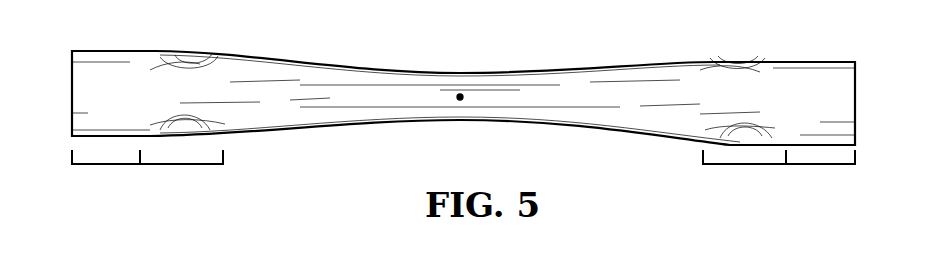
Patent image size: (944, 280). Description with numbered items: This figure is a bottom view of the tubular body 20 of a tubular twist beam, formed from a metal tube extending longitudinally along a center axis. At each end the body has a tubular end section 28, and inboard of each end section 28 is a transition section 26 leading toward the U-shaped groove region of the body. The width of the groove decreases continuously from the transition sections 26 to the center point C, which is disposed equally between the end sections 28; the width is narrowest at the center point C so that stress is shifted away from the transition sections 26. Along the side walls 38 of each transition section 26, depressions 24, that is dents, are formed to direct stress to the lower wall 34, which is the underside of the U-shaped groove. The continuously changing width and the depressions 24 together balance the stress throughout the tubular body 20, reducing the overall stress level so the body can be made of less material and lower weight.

The tubular body 20 is at (551, 52).
The depressions 24 is at (177, 123).
The transition sections 26 is at (175, 164).
The tubular end sections 28 is at (92, 164).
The lower wall 34 is at (497, 95).
The side walls 38 is at (300, 60).
The center point C is at (460, 100).